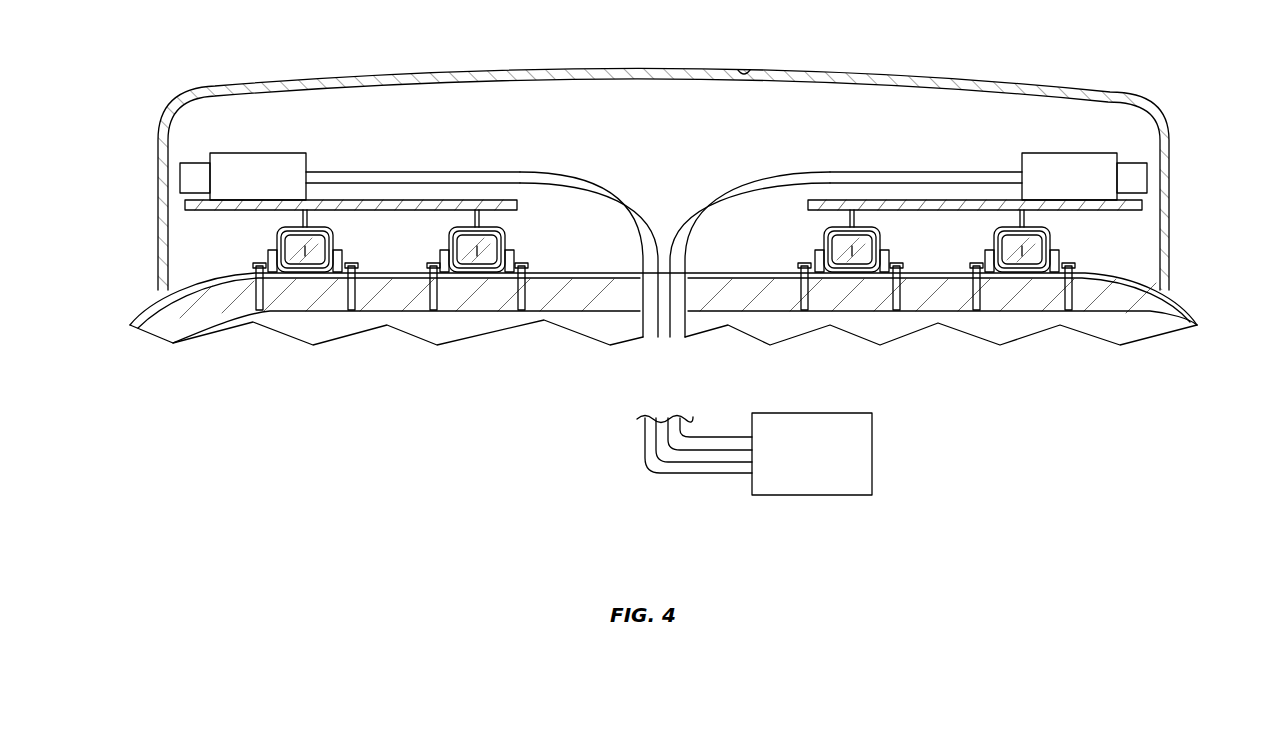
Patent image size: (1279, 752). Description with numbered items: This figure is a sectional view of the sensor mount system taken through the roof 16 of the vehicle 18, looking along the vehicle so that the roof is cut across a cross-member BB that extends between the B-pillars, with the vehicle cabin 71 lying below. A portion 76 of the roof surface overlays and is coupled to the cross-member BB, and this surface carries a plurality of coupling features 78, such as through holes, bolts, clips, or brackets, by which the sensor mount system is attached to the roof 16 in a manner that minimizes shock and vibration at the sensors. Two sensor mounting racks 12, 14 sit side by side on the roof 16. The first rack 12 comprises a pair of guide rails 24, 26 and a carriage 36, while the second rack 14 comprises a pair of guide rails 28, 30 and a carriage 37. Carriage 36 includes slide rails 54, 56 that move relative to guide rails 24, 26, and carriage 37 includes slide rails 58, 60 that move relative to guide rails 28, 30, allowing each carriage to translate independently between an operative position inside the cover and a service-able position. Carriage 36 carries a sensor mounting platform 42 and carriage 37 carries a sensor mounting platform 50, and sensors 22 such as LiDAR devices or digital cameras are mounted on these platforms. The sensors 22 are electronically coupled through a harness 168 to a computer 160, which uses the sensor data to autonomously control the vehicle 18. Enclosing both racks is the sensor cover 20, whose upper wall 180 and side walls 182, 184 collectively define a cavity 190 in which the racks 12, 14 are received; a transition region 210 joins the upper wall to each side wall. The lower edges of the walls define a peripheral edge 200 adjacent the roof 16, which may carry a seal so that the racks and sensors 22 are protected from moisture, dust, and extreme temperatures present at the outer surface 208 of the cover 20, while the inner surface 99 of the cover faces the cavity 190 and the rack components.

The sensor mounting rack 12 is at (574, 238).
The sensor mounting rack 14 is at (756, 221).
The roof 16 is at (149, 288).
The vehicle 18 is at (131, 312).
The sensor cover 20 is at (166, 108).
The sensors 22 is at (294, 153).
The guide rail 24 is at (336, 246).
The guide rail 26 is at (508, 246).
The guide rail 28 is at (822, 243).
The guide rail 30 is at (993, 243).
The carriage 36 is at (237, 212).
The carriage 37 is at (1090, 212).
The sensor mounting platform 42 is at (524, 198).
The sensor mounting platform 50 is at (808, 204).
The slide rail 54 is at (305, 255).
The slide rail 56 is at (477, 255).
The slide rail 58 is at (852, 255).
The slide rail 60 is at (1025, 255).
The vehicle cabin 71 is at (814, 334).
The portion of surface 76 is at (718, 274).
The coupling features 78 is at (255, 300).
The inner surface 99 is at (748, 76).
The computer 160 is at (820, 470).
The harness 168 is at (674, 236).
The upper wall 180 is at (637, 70).
The side wall 182 is at (1171, 248).
The side wall 184 is at (157, 236).
The cavity 190 is at (486, 132).
The peripheral edge 200 is at (1177, 308).
The outer surface 208 is at (1121, 91).
The side wall portion 210 is at (157, 152).
The cross-member BB is at (163, 330).